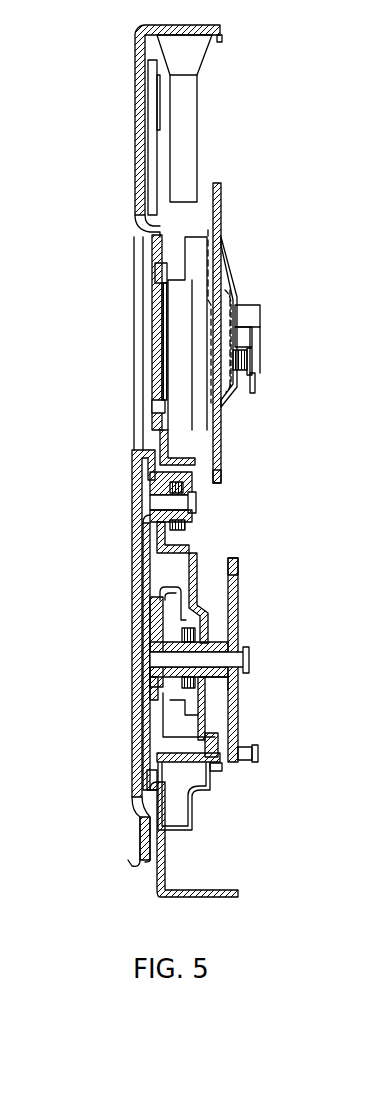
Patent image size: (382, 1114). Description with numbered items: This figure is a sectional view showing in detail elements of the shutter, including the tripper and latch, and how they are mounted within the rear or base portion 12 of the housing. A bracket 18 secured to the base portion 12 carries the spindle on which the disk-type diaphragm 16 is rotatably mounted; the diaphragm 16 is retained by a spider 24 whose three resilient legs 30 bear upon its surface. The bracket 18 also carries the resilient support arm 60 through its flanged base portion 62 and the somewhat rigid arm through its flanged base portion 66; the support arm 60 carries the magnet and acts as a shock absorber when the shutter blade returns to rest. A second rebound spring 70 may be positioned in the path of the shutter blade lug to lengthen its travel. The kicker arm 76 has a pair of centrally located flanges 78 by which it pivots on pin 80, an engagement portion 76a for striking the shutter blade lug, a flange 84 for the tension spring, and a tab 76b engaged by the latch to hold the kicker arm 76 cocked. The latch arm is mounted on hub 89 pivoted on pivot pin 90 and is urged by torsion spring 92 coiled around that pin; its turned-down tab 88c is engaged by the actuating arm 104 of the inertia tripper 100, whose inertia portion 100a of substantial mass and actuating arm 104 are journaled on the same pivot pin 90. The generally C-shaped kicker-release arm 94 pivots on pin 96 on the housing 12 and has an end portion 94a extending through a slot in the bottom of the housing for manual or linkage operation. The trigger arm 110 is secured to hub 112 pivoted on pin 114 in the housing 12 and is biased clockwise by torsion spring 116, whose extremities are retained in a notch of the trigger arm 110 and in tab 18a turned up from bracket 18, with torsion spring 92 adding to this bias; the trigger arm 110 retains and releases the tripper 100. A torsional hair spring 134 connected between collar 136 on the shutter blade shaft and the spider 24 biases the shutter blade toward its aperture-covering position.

The base portion of housing 12 is at (152, 245).
The diaphragm 16 is at (224, 184).
The bracket 18 is at (197, 233).
The tab 18a is at (222, 482).
The spider 24 is at (240, 280).
The resilient legs 30 is at (222, 238).
The resilient support arm 60 is at (158, 310).
The flanged base portion 62 is at (165, 362).
The flanged base portion 66 is at (160, 383).
The second rebound spring 70 is at (190, 137).
The kicker arm 76 is at (205, 800).
The engagement portion 76a is at (160, 700).
The tab 76b is at (198, 712).
The flanges 78 is at (150, 772).
The pin 80 is at (260, 753).
The flange 84 is at (205, 823).
The turned-down tab 88c is at (153, 590).
The hub 89 is at (210, 680).
The pivot pin 90 is at (250, 661).
The torsion spring 92 is at (200, 638).
The kicker-release arm 94 is at (155, 170).
The end portion 94a is at (216, 898).
The pin 96 is at (160, 97).
The inertia tripper 100 is at (240, 604).
The inertia portion 100a is at (240, 572).
The actuating arm 104 is at (153, 618).
The trigger arm 110 is at (200, 548).
The hub 112 is at (153, 490).
The pin 114 is at (198, 503).
The torsion spring 116 is at (188, 527).
The torsional hair spring 134 is at (255, 388).
The collar 136 is at (255, 365).